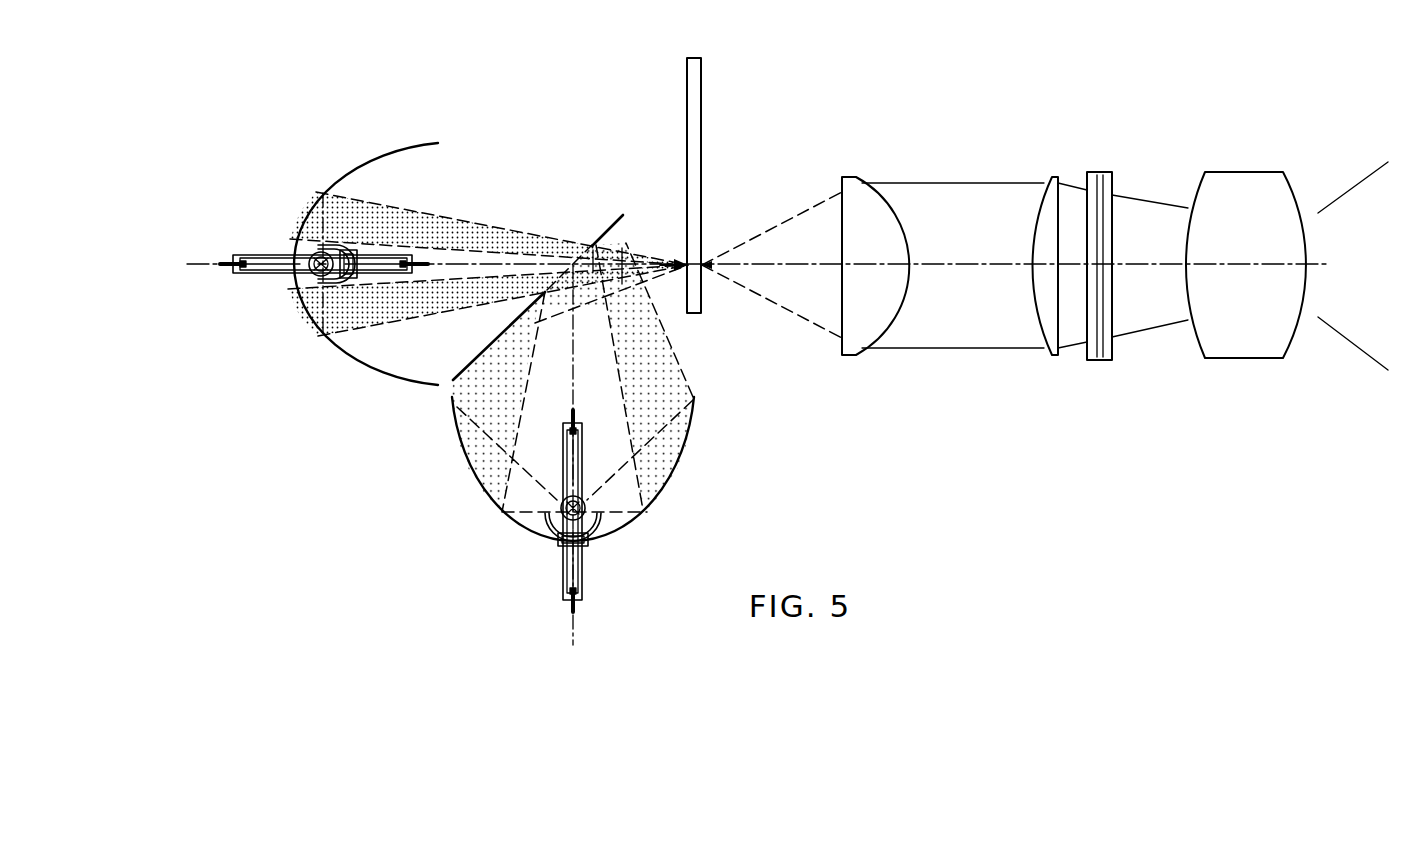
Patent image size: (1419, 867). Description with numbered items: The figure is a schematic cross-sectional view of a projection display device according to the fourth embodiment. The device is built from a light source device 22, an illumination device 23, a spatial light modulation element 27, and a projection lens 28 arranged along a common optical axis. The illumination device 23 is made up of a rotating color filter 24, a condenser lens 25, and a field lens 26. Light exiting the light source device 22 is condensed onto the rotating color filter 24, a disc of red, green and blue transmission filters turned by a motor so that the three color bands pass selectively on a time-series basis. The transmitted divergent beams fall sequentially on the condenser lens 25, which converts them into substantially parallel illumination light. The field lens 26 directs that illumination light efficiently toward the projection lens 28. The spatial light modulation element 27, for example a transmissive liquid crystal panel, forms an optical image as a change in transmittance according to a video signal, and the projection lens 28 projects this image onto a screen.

The light source device 22 is at (103, 222).
The illumination device 23 is at (1057, 43).
The rotating color filter 24 is at (702, 110).
The condenser lens 25 is at (853, 178).
The field lens 26 is at (1055, 178).
The spatial light modulation element 27 is at (1103, 174).
The projection lens 28 is at (1243, 180).